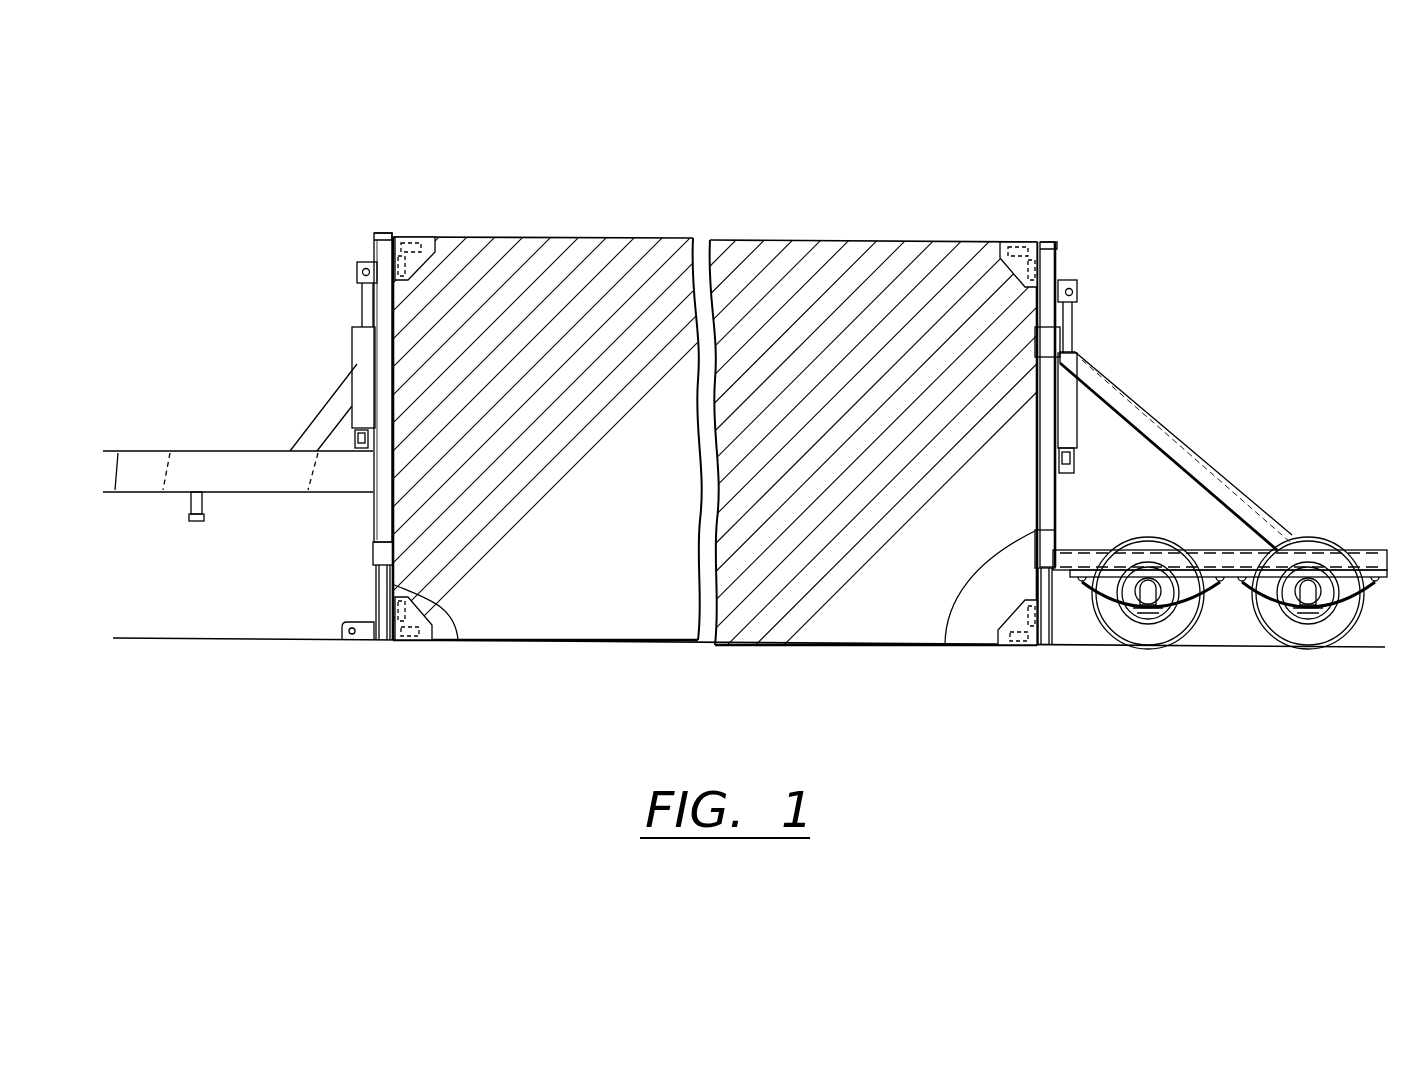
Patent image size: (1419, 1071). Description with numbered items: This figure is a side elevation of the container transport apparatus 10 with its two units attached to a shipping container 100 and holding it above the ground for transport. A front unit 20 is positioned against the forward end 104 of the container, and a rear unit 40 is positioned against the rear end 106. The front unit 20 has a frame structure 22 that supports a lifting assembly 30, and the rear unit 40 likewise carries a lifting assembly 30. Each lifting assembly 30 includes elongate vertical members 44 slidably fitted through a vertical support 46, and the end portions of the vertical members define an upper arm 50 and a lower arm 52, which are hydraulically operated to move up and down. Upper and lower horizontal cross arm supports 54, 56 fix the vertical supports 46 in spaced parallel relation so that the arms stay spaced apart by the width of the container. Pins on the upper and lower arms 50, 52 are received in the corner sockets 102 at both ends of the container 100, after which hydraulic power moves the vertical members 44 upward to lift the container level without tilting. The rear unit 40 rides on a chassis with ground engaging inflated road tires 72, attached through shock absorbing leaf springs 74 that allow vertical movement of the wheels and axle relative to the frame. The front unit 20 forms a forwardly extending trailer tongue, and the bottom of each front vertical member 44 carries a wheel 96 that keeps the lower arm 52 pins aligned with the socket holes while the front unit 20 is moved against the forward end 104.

The container transport apparatus 10 is at (1216, 230).
The front unit 20 is at (238, 451).
The frame structure 22 is at (269, 450).
The lifting assembly 30 is at (357, 305).
The rear unit 40 is at (1228, 470).
The elongate vertical member 44 is at (383, 240).
The vertical support 46 is at (373, 503).
The upper arm 50 is at (385, 340).
The lower arm 52 is at (373, 597).
The upper horizontal cross arm support 54 is at (386, 293).
The lower horizontal cross arm support 56 is at (380, 552).
The road tire 72 is at (1140, 628).
The leaf spring 74 is at (1198, 607).
The wheel 96 is at (337, 640).
The shipping container 100 is at (838, 243).
The corner socket 102 is at (408, 237).
The forward end 104 is at (457, 640).
The rear end 106 is at (945, 645).